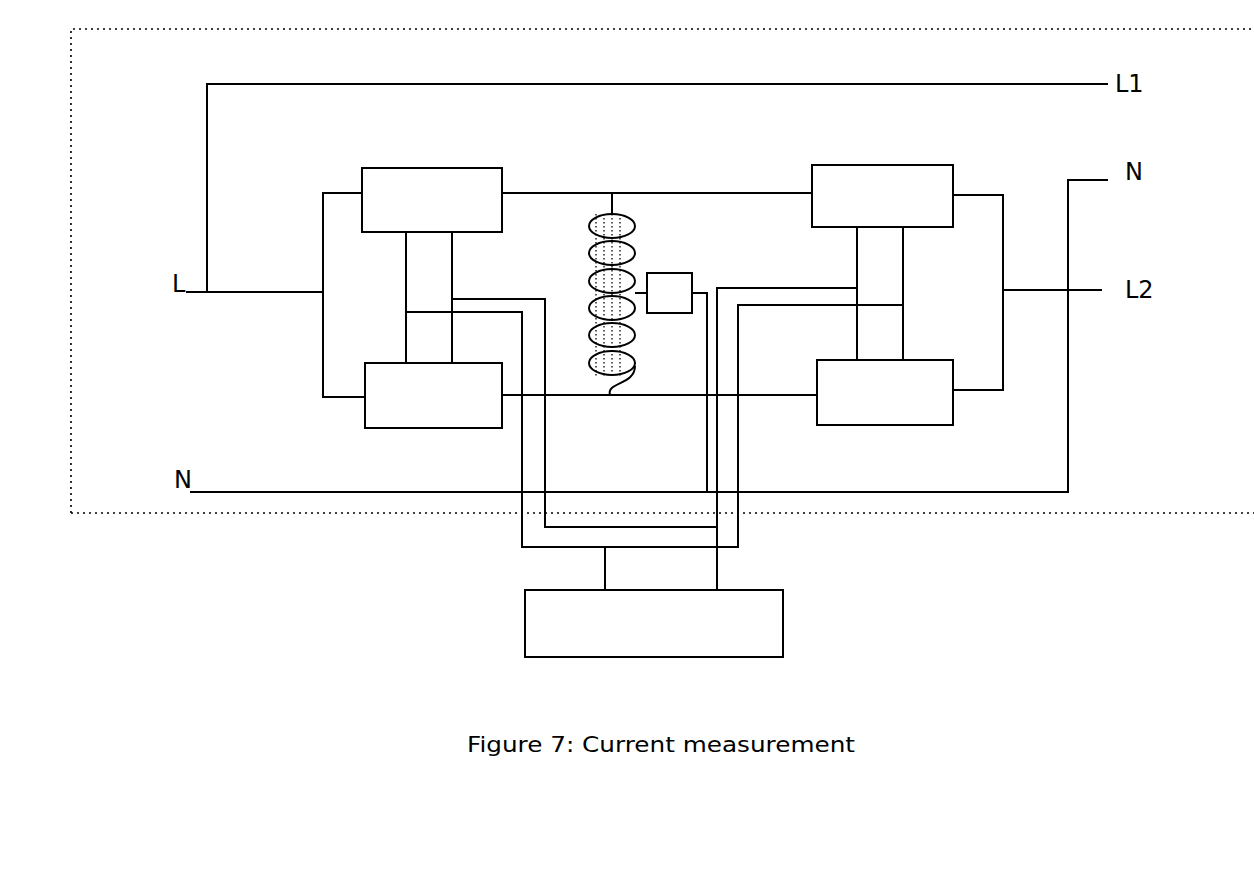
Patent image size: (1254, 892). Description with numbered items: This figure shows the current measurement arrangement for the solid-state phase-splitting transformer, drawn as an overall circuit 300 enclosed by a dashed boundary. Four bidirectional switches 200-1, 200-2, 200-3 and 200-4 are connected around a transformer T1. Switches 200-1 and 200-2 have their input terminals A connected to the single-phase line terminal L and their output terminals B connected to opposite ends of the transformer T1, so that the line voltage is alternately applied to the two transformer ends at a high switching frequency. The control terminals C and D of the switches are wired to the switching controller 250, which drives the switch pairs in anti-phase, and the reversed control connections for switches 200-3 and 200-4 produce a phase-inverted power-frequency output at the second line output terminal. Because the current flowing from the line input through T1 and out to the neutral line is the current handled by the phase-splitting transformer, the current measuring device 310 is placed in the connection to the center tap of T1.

The current measurement circuit 300 is at (140, 58).
The bidirectional switch 200-1 is at (357, 166).
The bidirectional switch 200-2 is at (360, 433).
The bidirectional switch 200-3 is at (873, 158).
The bidirectional switch 200-4 is at (880, 428).
The transformer T1 is at (586, 292).
The current measuring device 310 is at (684, 267).
The switching controller 250 is at (673, 632).